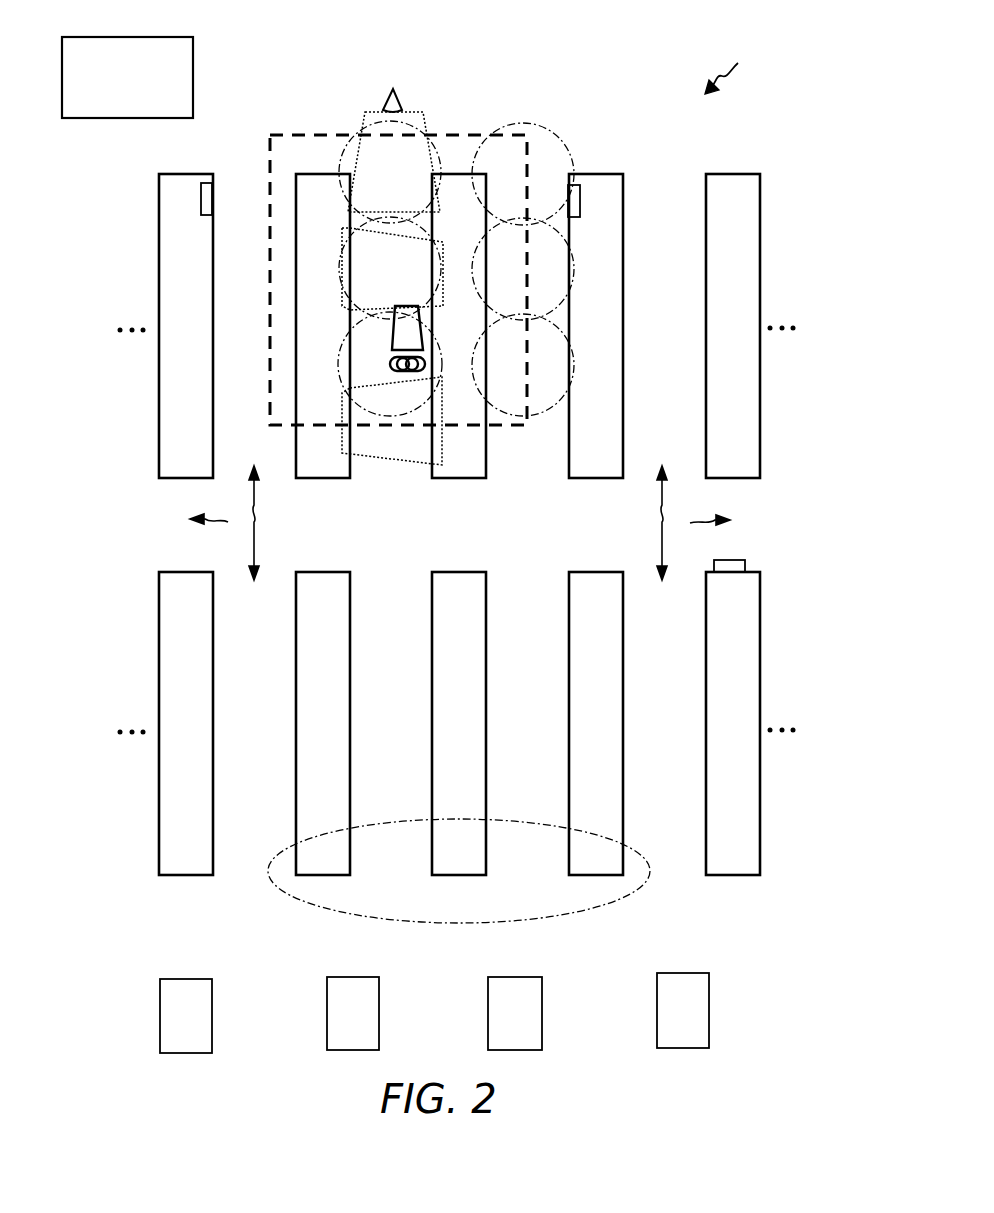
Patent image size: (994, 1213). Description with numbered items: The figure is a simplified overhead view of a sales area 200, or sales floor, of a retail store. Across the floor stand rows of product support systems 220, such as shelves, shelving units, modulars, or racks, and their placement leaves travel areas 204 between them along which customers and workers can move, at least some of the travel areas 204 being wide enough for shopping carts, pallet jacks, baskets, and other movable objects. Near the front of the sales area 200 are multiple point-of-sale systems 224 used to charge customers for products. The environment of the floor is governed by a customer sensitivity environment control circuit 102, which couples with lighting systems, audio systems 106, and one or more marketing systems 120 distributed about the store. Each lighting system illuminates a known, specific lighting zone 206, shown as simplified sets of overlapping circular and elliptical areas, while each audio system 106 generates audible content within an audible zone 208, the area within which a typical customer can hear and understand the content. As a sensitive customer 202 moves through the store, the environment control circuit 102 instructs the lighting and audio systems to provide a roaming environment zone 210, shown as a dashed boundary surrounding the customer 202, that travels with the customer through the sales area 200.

The customer sensitivity environment control circuit 102 is at (190, 54).
The audio system 106 is at (392, 89).
The marketing system 120 is at (207, 202).
The sales area 200 is at (735, 64).
The sensitive customer 202 is at (407, 372).
The travel area 204 is at (460, 523).
The lighting zone 206 is at (446, 150).
The audible zone 208 is at (370, 110).
The roaming environment zone 210 is at (268, 288).
The product support system 220 is at (172, 250).
The point-of-sale system 224 is at (202, 980).